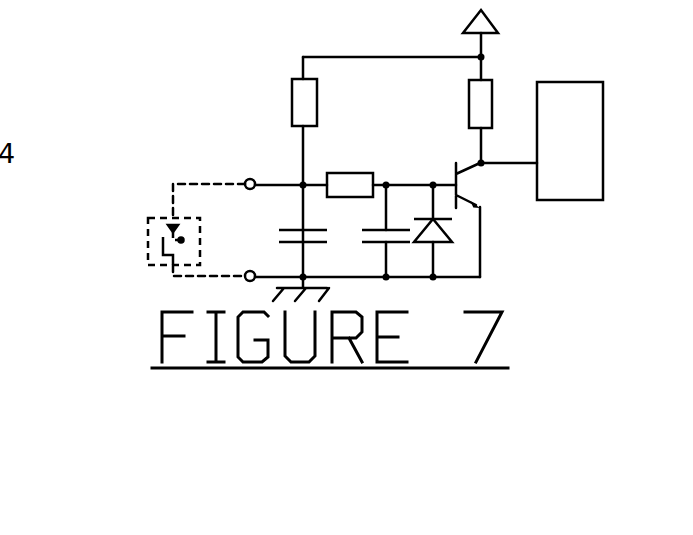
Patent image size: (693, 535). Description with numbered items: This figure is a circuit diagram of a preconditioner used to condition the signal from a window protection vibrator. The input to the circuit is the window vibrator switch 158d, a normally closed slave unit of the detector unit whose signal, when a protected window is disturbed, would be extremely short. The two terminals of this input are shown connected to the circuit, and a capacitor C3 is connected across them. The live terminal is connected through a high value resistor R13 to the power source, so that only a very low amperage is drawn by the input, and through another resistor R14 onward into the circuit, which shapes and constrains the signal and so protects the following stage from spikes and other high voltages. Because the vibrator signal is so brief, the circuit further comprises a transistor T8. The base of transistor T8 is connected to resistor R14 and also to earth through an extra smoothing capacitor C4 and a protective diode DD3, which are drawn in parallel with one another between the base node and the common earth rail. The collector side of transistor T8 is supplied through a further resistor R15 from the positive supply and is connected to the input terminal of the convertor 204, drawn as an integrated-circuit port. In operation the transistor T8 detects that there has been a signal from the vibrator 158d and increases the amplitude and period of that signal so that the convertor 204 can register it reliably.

The window vibrator switch 158d is at (148, 236).
The convertor 204 is at (603, 102).
The high value resistor R13 is at (283, 102).
The resistor R14 is at (350, 173).
The resistor R15 is at (462, 104).
The capacitor C3 is at (299, 249).
The extra smoothing capacitor C4 is at (382, 250).
The protective diode DD3 is at (447, 245).
The transistor T8 is at (475, 185).